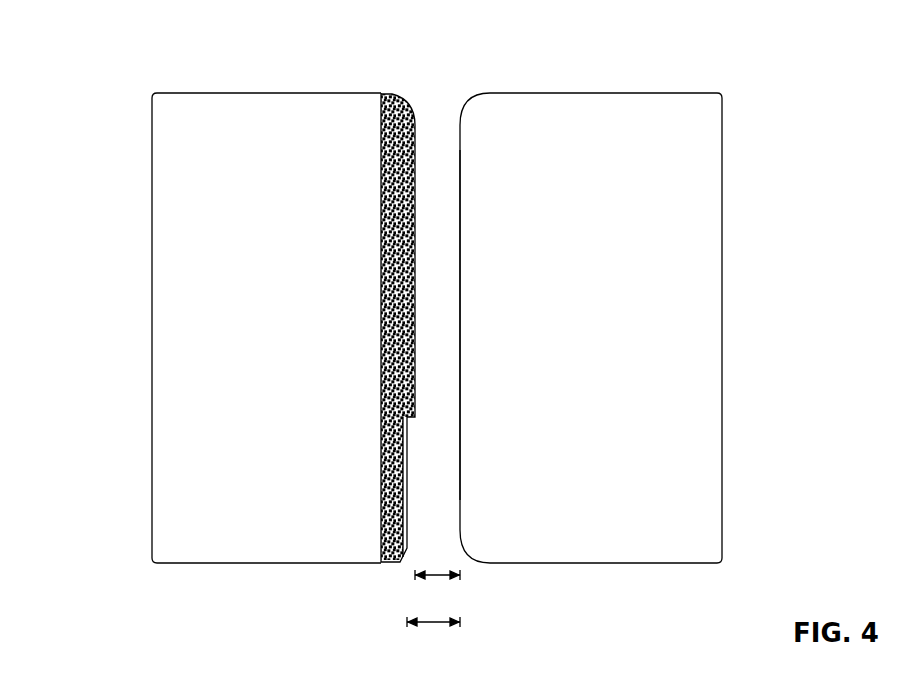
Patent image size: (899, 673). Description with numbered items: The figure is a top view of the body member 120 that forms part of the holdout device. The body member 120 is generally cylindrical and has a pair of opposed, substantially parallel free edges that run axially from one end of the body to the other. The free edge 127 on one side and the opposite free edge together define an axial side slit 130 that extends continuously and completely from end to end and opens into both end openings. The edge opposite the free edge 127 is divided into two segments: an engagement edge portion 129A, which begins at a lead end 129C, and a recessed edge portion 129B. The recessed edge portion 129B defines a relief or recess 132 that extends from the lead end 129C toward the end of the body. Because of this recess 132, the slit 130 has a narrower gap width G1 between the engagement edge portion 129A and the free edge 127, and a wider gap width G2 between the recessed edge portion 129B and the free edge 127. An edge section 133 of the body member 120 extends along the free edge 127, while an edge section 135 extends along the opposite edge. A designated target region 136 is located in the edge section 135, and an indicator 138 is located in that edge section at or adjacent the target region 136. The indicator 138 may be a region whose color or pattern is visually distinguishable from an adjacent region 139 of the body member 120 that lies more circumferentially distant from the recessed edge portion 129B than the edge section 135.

The body member 120 is at (127, 65).
The free edge 127 is at (460, 282).
The engagement edge portion 129A is at (405, 325).
The recessed edge portion 129B is at (405, 437).
The lead end 129C is at (413, 416).
The side slit 130 is at (430, 119).
The recess 132 is at (415, 490).
The edge section 133 is at (470, 140).
The edge section 135 is at (283, 300).
The target region 136 is at (390, 515).
The indicator 138 is at (387, 554).
The adjacent region 139 is at (371, 543).
The gap width G1 is at (438, 578).
The gap width G2 is at (433, 624).